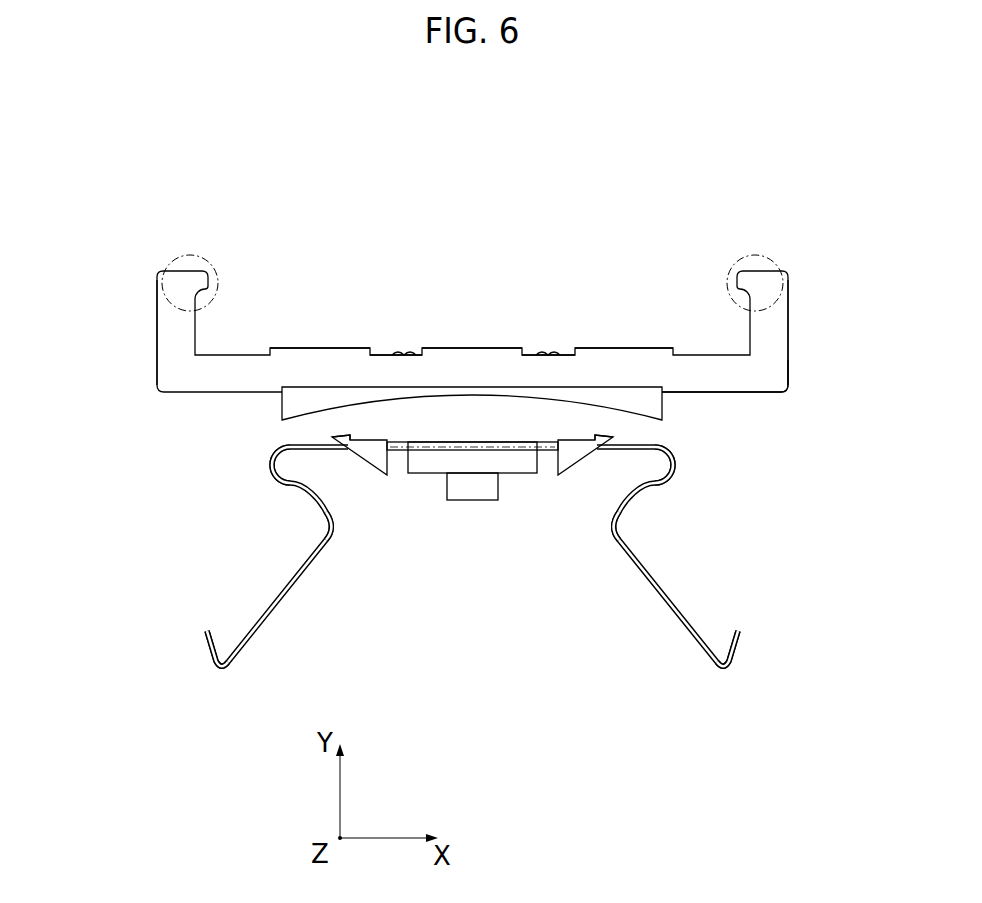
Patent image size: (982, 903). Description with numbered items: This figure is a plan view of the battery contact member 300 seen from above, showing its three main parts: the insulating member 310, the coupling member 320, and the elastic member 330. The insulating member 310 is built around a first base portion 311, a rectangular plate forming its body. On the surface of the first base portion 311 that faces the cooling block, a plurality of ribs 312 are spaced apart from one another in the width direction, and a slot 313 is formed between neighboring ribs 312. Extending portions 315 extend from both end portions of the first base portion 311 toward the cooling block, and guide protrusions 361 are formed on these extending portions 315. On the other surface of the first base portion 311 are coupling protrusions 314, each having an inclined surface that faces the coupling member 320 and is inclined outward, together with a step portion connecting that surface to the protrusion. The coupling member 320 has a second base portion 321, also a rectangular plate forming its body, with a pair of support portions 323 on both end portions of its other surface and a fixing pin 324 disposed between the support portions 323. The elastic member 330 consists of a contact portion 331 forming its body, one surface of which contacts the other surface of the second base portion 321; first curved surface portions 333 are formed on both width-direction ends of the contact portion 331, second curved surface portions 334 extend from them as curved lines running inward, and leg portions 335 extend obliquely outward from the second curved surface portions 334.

The battery contact member 300 is at (612, 128).
The insulating member 310 is at (150, 395).
The first base portion 311 is at (729, 374).
The ribs 312 is at (628, 347).
The slots 313 is at (547, 353).
The coupling protrusions 314 is at (589, 631).
The extending portions 315 is at (789, 322).
The coupling member 320 is at (564, 592).
The second base portion 321 is at (518, 412).
The support portions 323 is at (425, 474).
The fixing pin 324 is at (473, 500).
The elastic member 330 is at (499, 615).
The contact portion 331 is at (614, 438).
The first curved surface portions 333 is at (674, 468).
The second curved surface portions 334 is at (620, 519).
The leg portions 335 is at (694, 627).
The guide protrusions 361 is at (770, 254).